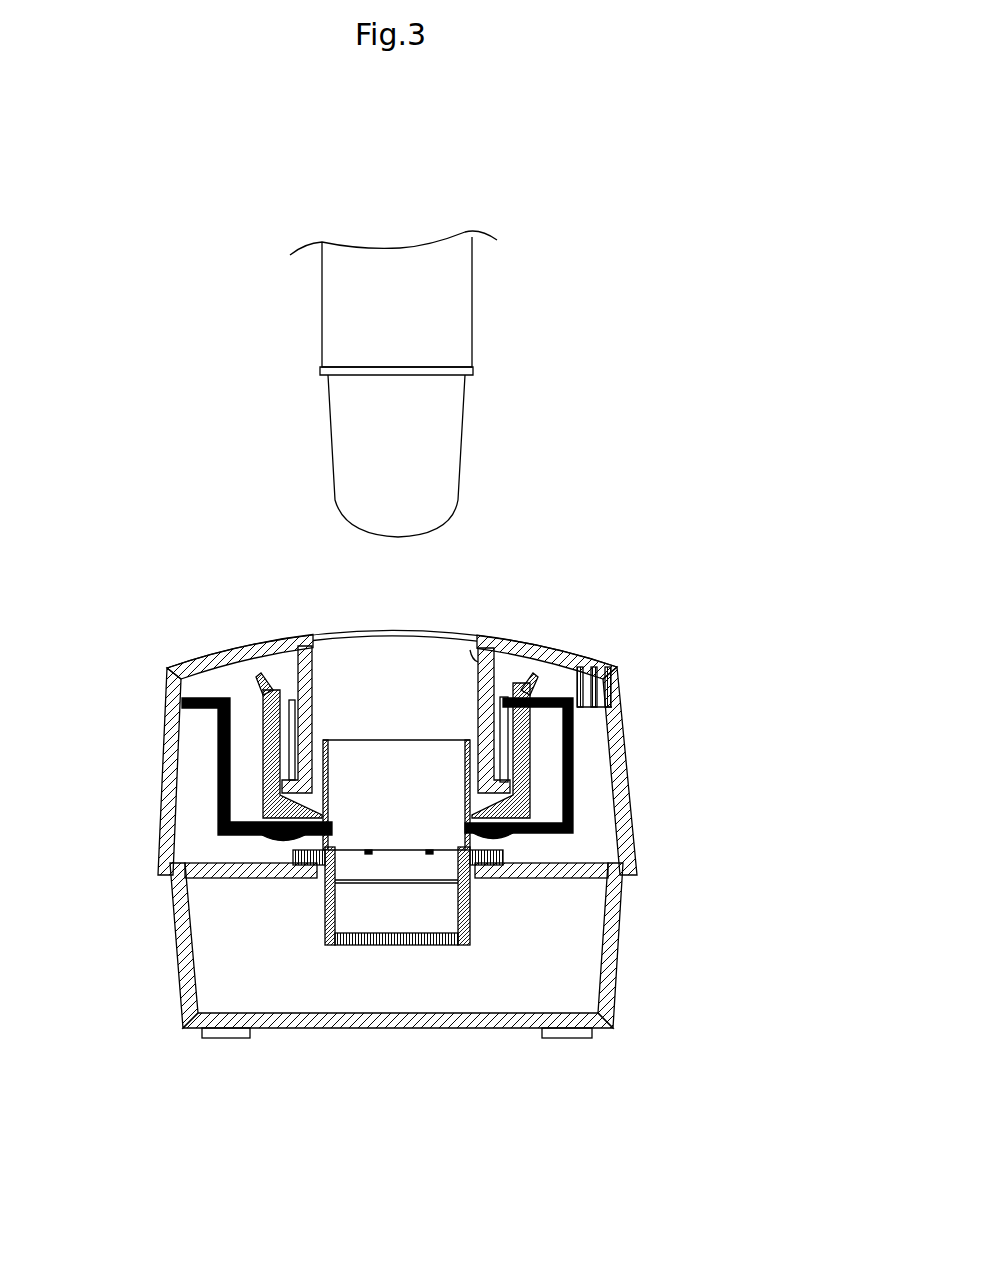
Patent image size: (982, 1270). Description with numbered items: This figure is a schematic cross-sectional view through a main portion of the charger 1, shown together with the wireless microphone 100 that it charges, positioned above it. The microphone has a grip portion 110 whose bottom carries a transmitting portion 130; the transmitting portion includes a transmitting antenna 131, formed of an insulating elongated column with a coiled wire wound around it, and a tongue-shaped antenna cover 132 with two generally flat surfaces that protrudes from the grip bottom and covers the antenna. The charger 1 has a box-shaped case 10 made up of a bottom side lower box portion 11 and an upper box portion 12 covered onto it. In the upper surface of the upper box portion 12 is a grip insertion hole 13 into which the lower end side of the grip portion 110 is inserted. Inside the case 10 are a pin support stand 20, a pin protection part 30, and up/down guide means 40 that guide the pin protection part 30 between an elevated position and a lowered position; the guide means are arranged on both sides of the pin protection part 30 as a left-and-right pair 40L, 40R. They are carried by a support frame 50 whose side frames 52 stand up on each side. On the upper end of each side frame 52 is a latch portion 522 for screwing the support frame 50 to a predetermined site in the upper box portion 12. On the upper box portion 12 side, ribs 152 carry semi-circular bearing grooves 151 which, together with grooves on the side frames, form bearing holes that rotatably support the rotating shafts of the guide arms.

The charger 1 is at (642, 590).
The case 10 is at (483, 942).
The lower box portion 11 is at (618, 945).
The upper box portion 12 is at (635, 847).
The grip insertion hole 13 is at (470, 652).
The pin support stand 20 is at (393, 945).
The pin protection part 30 is at (388, 760).
The up/down guide means 40 is at (436, 745).
The left up/down guide means 40L is at (206, 745).
The right up/down guide means 40R is at (530, 777).
The support frame 50 is at (200, 806).
The side frame 52 is at (398, 710).
The latch portion 522 is at (217, 763).
The wireless microphone 100 is at (391, 354).
The grip portion 110 is at (472, 300).
The transmitting portion 130 is at (368, 456).
The transmitting antenna 131 is at (368, 456).
The antenna cover 132 is at (465, 450).
The bearing groove 151 is at (262, 694).
The rib 152 is at (275, 668).